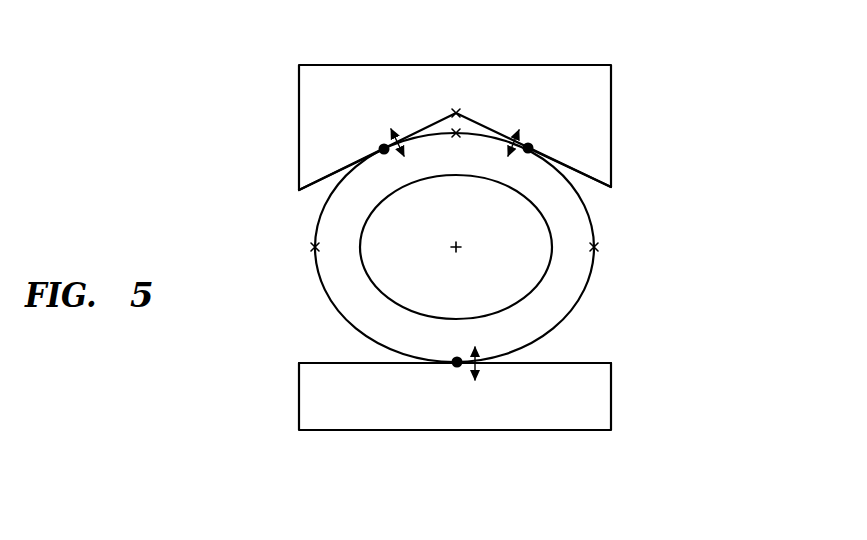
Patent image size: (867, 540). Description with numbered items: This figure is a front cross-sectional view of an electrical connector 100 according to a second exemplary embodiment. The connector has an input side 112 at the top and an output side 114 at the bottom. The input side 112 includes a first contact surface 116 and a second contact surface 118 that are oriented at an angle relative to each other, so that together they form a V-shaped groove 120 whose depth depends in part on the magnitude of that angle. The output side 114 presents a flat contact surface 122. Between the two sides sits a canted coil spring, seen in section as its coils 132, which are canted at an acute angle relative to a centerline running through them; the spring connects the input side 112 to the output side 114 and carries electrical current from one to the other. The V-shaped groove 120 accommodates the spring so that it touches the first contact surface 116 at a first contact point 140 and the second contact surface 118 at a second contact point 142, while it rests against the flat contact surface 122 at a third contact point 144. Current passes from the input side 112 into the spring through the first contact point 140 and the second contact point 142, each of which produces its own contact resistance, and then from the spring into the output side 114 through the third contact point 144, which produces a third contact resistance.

The electrical connector 100 is at (655, 138).
The input side 112 is at (327, 117).
The output side 114 is at (590, 398).
The first contact surface 116 is at (321, 185).
The second contact surface 118 is at (597, 190).
The V-shaped groove 120 is at (447, 152).
The flat contact surface 122 is at (578, 362).
The coils 132 is at (575, 270).
The first contact point 140 is at (384, 149).
The second contact point 142 is at (528, 148).
The third contact point 144 is at (456, 366).